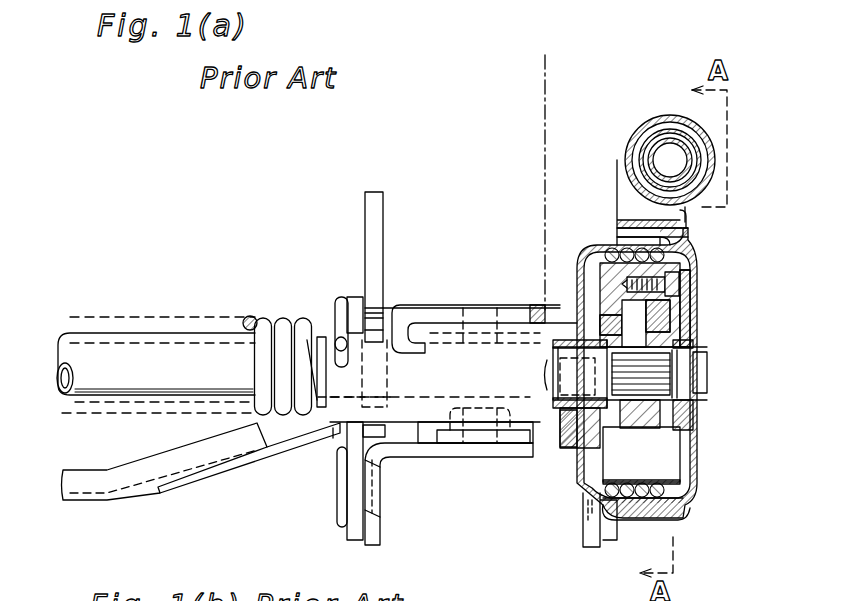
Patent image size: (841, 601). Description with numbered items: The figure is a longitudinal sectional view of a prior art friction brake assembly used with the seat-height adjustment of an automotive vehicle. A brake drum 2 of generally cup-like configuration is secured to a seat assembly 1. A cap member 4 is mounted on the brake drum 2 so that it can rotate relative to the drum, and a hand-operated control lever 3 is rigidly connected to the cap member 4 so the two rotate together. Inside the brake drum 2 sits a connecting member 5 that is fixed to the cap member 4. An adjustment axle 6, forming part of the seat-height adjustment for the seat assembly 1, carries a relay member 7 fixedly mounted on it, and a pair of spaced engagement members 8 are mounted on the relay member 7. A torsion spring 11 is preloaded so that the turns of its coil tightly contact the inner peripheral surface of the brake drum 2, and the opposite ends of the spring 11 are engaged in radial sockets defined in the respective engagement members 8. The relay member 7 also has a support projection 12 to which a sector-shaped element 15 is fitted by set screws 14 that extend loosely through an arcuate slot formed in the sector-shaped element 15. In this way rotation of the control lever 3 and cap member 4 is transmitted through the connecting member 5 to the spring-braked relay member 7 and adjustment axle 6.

The seat assembly 1 is at (546, 100).
The brake drum 2 is at (610, 243).
The hand-operated control lever 3 is at (641, 122).
The cap member 4 is at (690, 492).
The connecting member 5 is at (690, 448).
The adjustment axle 6 is at (707, 368).
The relay member 7 is at (602, 430).
The engagement members 8 is at (695, 316).
The torsion spring 11 is at (685, 505).
The support projection 12 is at (595, 272).
The set screws 14 is at (693, 280).
The sector-shaped element 15 is at (690, 243).